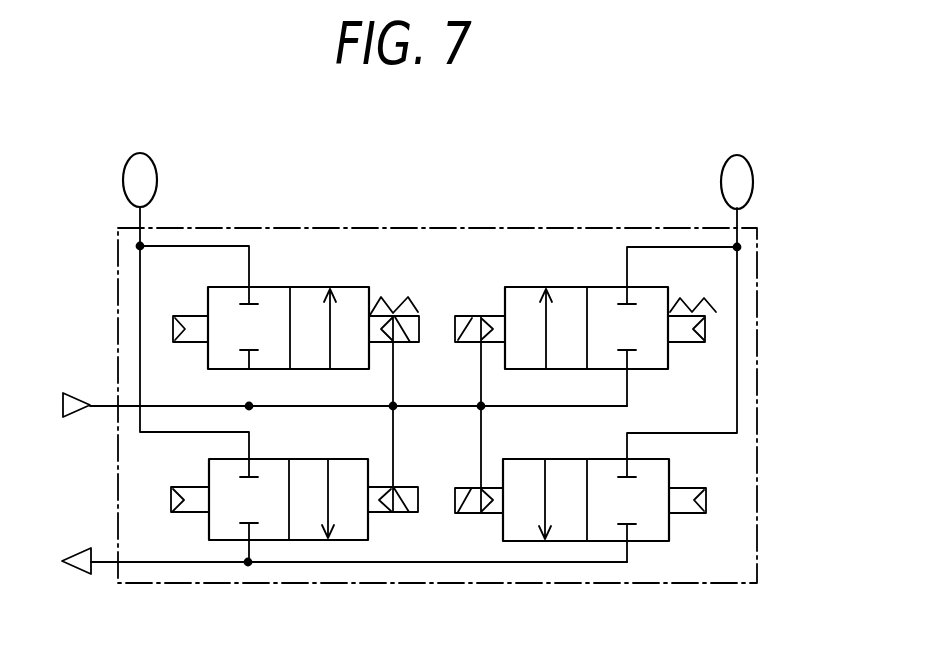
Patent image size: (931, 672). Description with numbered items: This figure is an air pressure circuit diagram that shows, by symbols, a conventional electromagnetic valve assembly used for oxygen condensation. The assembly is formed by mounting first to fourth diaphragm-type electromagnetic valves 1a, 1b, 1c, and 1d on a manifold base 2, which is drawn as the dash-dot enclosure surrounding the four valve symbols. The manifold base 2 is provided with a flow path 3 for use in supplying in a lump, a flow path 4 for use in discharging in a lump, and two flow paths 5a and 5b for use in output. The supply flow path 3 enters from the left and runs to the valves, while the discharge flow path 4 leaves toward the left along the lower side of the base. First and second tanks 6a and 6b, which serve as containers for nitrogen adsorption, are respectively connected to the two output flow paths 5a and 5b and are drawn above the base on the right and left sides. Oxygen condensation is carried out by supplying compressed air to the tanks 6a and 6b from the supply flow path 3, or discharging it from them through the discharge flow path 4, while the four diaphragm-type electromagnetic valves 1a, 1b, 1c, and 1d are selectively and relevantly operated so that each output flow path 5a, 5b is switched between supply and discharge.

The first diaphragm-type electromagnetic valve 1a is at (568, 287).
The second diaphragm-type electromagnetic valve 1b is at (307, 287).
The third diaphragm-type electromagnetic valve 1c is at (648, 543).
The fourth diaphragm-type electromagnetic valve 1d is at (310, 541).
The manifold base 2 is at (460, 228).
The flow path for use in supplying in a lump 3 is at (163, 405).
The flow path for use in discharging in a lump 4 is at (197, 562).
The flow path for use in output 5a is at (740, 237).
The flow path for use in output 5b is at (138, 280).
The first tank 6a is at (736, 163).
The second tank 6b is at (140, 158).